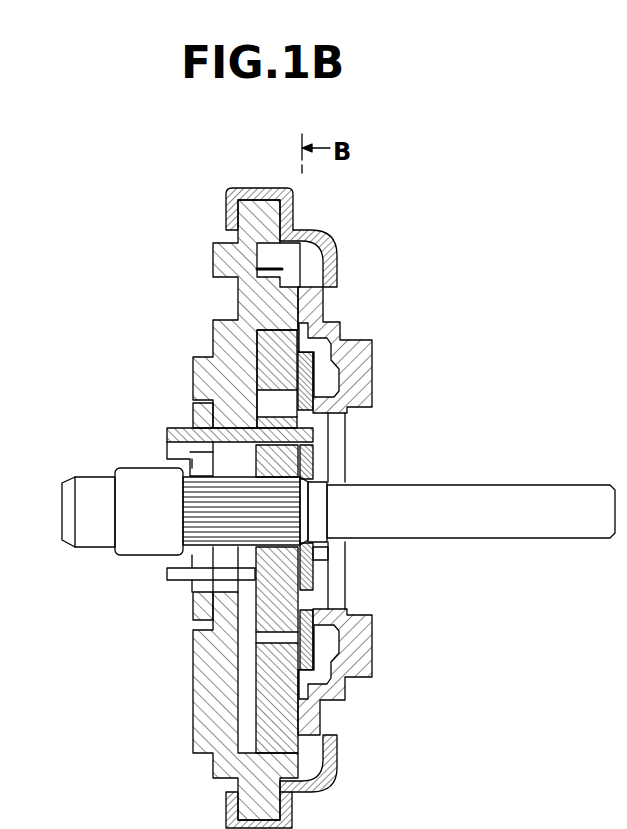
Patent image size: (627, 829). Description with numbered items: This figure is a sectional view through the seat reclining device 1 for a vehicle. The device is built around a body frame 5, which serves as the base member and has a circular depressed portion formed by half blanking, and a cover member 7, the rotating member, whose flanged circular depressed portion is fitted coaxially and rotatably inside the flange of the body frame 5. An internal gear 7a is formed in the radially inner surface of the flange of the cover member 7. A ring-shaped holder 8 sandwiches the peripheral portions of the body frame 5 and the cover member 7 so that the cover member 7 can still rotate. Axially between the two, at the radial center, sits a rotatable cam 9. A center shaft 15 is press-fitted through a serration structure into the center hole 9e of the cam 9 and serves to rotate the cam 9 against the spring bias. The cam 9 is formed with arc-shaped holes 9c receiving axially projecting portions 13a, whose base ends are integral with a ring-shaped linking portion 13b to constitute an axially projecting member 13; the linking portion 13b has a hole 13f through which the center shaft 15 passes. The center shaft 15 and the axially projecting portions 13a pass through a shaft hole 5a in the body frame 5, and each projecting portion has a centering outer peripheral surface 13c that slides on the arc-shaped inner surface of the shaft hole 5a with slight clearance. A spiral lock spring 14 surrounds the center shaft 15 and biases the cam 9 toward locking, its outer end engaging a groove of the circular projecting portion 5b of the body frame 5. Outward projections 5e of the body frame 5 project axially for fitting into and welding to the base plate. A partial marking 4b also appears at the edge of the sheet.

The seat reclining device 1 is at (88, 343).
The adjacent element (partial) 4b is at (12, 590).
The body frame 5 is at (233, 330).
The shaft hole 5a is at (240, 446).
The circular projecting portion 5b is at (196, 408).
The outward projection 5e is at (193, 700).
The cover member 7 is at (303, 253).
The internal gear 7a is at (300, 282).
The holder 8 is at (260, 187).
The cam 9 is at (335, 432).
The arc-shaped hole 9c is at (277, 426).
The center hole 9e is at (275, 494).
The axially projecting member 13 is at (315, 557).
The axially projecting portion 13a is at (167, 433).
The linking portion 13b is at (313, 573).
The centering outer peripheral surface 13c is at (230, 413).
The hole 13f is at (312, 470).
The lock spring 14 is at (193, 603).
The center shaft 15 is at (503, 497).